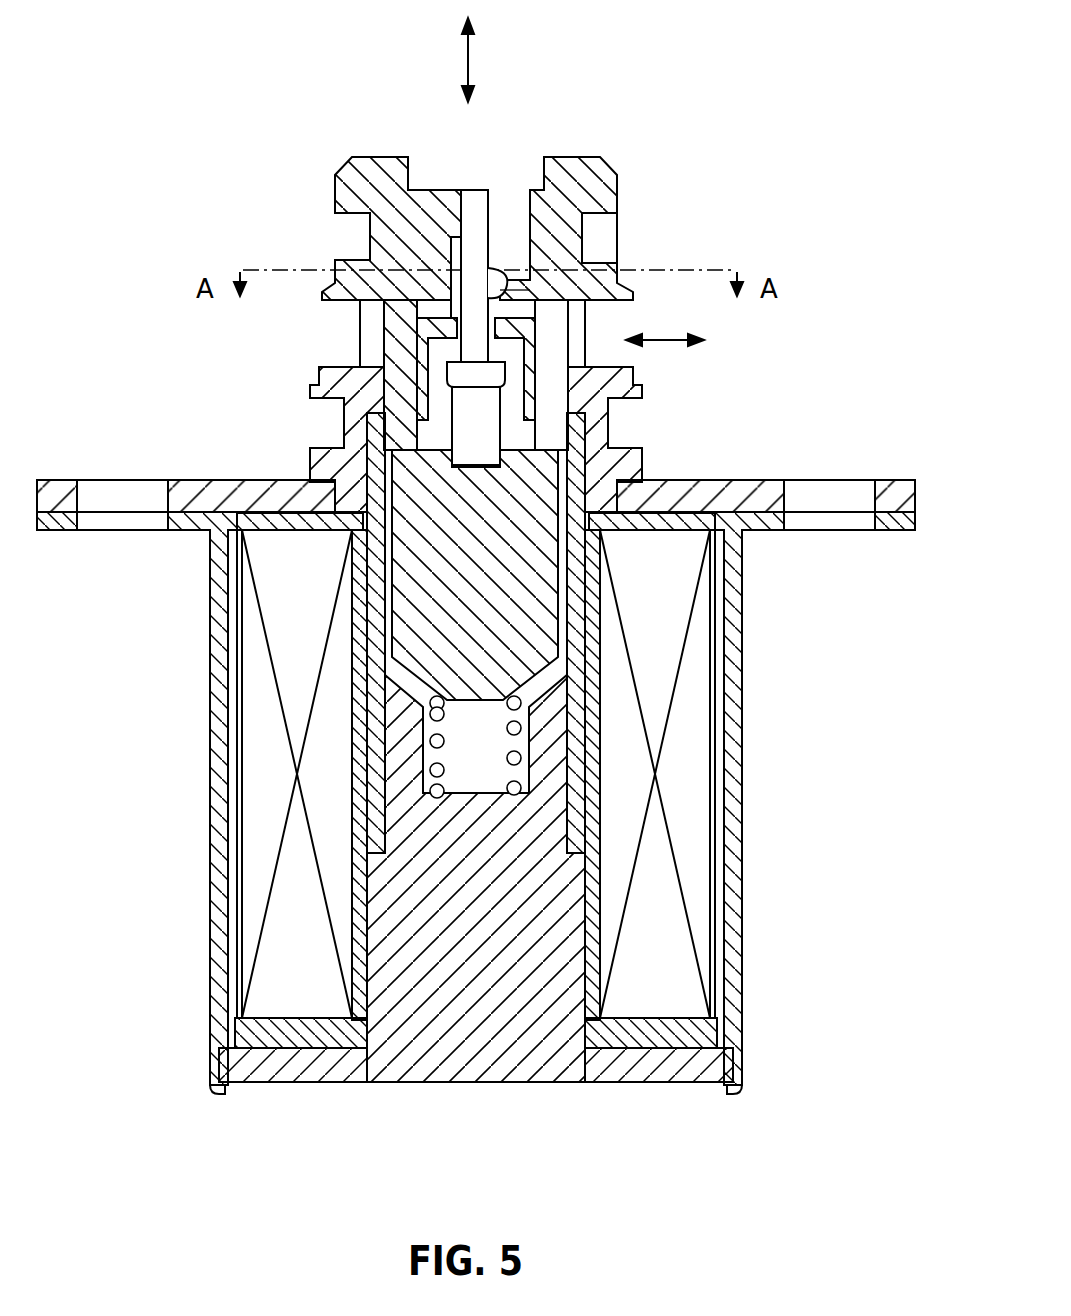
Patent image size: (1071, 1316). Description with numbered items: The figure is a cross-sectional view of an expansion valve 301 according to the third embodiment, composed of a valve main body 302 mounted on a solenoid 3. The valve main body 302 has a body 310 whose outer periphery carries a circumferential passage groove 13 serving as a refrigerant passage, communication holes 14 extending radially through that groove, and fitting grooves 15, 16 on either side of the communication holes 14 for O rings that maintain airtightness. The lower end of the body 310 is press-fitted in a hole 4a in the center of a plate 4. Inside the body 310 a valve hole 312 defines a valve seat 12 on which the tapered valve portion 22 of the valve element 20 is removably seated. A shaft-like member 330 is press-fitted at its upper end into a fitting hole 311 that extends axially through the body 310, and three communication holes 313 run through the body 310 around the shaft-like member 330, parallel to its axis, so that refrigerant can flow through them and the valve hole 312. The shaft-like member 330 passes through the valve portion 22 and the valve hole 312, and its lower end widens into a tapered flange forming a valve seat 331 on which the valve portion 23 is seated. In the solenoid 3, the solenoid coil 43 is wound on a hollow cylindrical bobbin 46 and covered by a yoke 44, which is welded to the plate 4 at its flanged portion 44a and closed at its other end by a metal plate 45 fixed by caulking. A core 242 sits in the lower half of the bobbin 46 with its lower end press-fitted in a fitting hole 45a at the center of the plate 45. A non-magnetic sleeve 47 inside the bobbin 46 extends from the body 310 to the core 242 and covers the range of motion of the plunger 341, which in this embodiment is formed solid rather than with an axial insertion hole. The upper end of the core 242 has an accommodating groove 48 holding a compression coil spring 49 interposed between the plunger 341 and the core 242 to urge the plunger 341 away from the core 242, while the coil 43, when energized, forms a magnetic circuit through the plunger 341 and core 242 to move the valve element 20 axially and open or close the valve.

The expansion valve 301 is at (544, 161).
The body 310 is at (353, 160).
The valve main body 302 is at (594, 152).
The fitting hole 311 is at (468, 188).
The communication holes 313 is at (531, 212).
The fitting groove 15 is at (602, 240).
The shaft-like member 330 is at (451, 262).
The valve hole 312 is at (508, 283).
The valve seat 12 is at (512, 291).
The passage groove 13 is at (322, 296).
The fitting groove 16 is at (623, 402).
The communication holes 14 is at (586, 300).
The valve element 20 is at (445, 375).
The valve portion 22 is at (437, 302).
The valve seat 331 is at (447, 378).
The valve portion 23 is at (450, 392).
The plate 4 is at (471, 496).
The hole 4a is at (340, 492).
The flanged portion 44a is at (62, 523).
The yoke 44 is at (218, 862).
The solenoid coil 43 is at (262, 733).
The sleeve 47 is at (362, 804).
The solenoid 3 is at (613, 811).
The core 242 is at (517, 1072).
The plunger 341 is at (412, 632).
The compression coil spring 49 is at (522, 762).
The accommodating groove 48 is at (522, 736).
The bobbin 46 is at (250, 1035).
The plate 45 is at (476, 1107).
The fitting hole 45a is at (367, 1067).